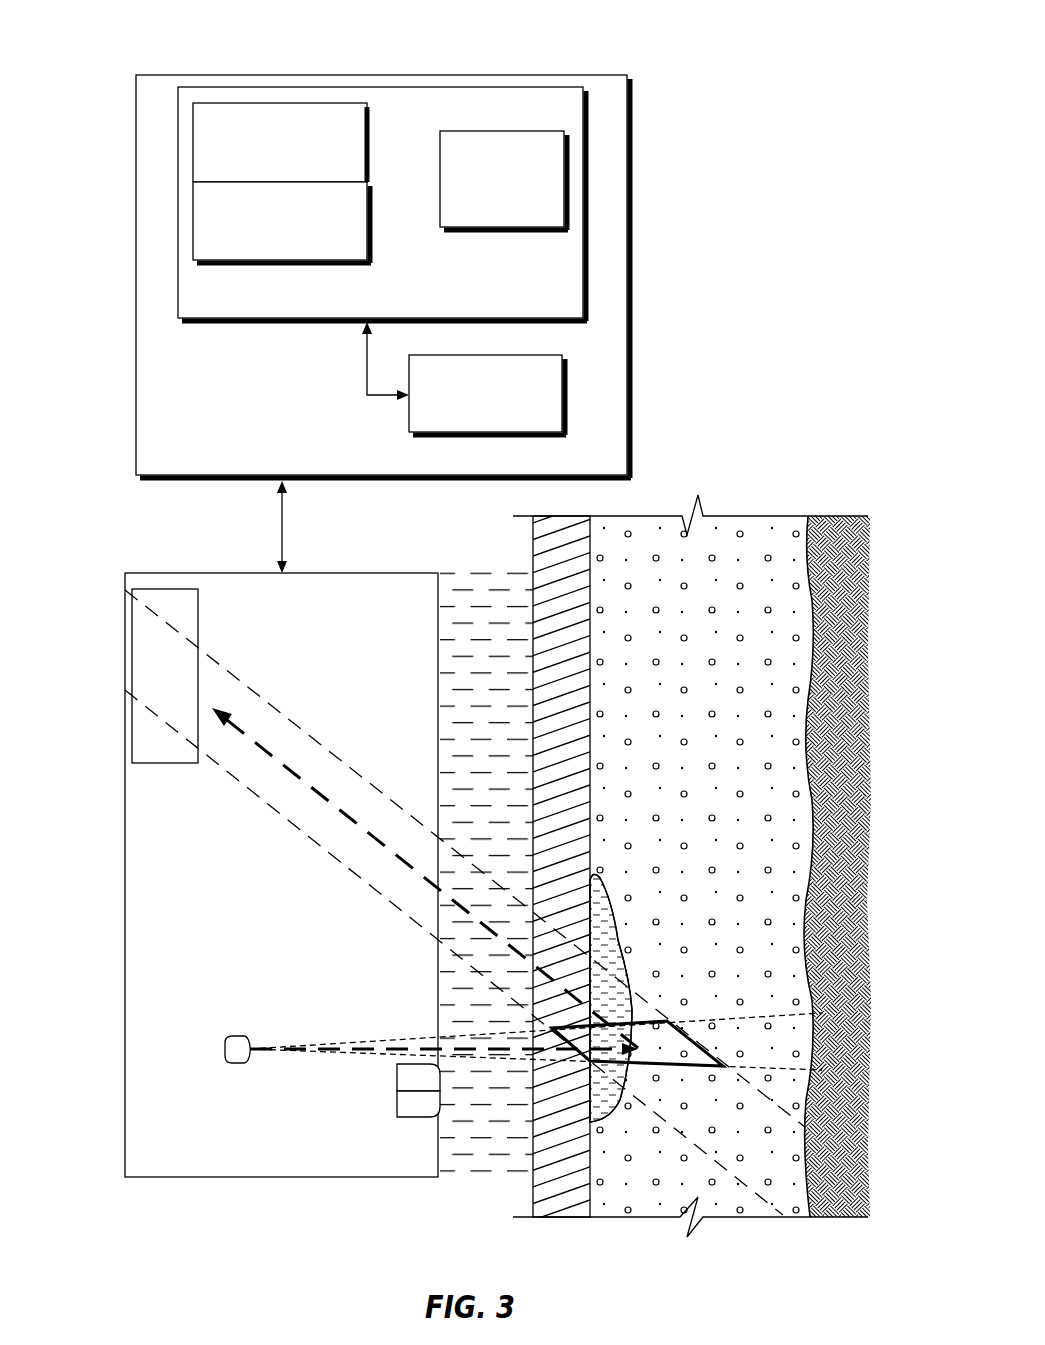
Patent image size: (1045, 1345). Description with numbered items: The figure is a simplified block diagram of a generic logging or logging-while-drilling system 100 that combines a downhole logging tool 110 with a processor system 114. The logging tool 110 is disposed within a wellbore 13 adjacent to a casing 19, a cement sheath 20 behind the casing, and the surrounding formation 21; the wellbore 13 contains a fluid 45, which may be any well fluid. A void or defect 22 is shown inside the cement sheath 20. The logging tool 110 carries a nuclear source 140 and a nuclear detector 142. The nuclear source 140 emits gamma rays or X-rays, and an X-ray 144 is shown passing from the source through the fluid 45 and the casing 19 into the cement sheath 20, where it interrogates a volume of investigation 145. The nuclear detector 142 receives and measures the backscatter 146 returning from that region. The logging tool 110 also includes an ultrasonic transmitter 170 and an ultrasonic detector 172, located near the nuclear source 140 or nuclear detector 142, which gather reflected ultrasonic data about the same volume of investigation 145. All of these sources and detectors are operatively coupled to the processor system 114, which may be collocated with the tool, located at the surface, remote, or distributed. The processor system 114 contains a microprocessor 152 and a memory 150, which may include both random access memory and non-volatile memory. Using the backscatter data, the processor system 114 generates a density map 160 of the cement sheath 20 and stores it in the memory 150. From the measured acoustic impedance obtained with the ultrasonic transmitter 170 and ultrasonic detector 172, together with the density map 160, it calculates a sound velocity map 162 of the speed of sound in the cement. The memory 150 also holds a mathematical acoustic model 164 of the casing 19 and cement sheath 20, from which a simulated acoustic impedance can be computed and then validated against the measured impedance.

The logging/LWD system 100 is at (710, 38).
The processor system 114 is at (136, 400).
The memory 150 is at (178, 290).
The acoustic model 164 is at (193, 140).
The density map 160 is at (193, 222).
The sound velocity map 162 is at (480, 131).
The microprocessor 152 is at (409, 415).
The logging tool 110 is at (116, 840).
The nuclear detector 142 is at (165, 765).
The nuclear source 140 is at (232, 1036).
The ultrasonic transmitter 170 is at (397, 1077).
The ultrasonic detector 172 is at (397, 1110).
The wellbore 13 is at (530, 883).
The fluid 45 is at (502, 768).
The casing 19 is at (565, 1205).
The cement sheath 20 is at (738, 1205).
The formation 21 is at (866, 740).
The void or defect 22 is at (640, 955).
The backscatter 146 is at (290, 768).
The X-ray 144 is at (480, 1065).
The volume of investigation 145 is at (667, 1068).